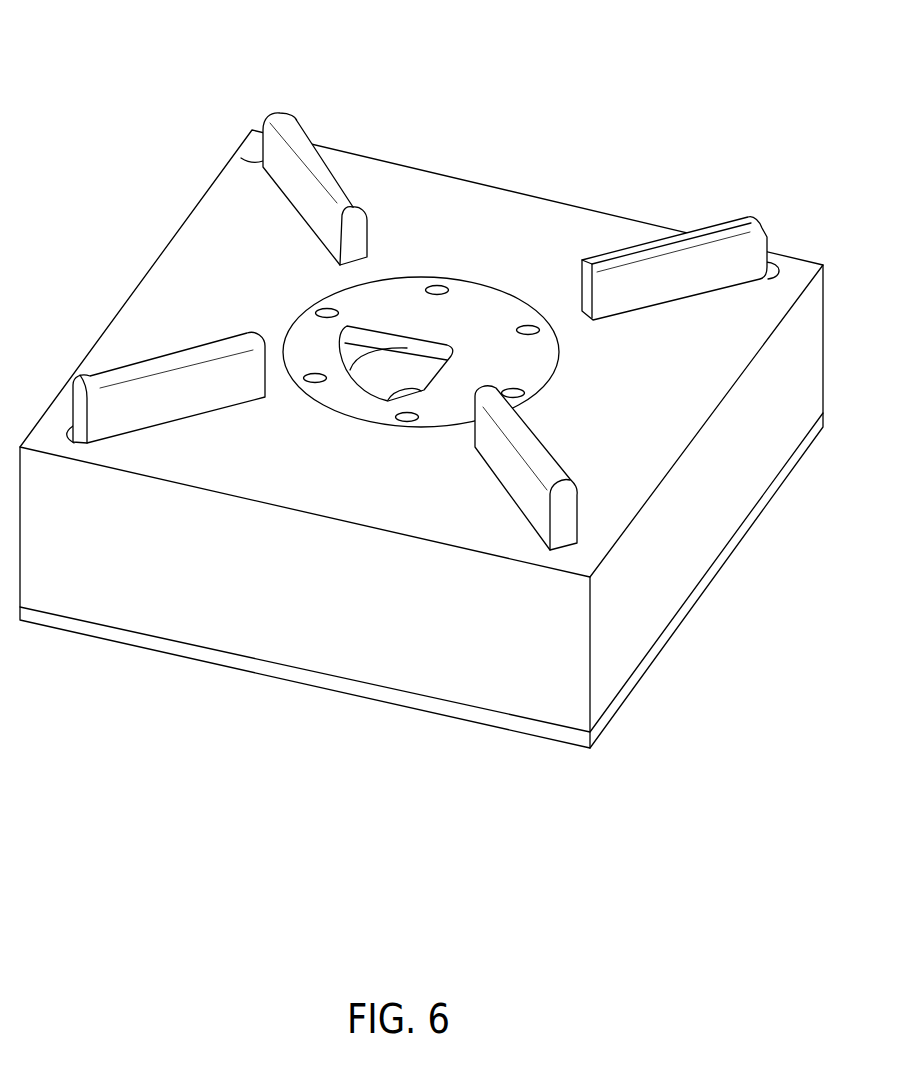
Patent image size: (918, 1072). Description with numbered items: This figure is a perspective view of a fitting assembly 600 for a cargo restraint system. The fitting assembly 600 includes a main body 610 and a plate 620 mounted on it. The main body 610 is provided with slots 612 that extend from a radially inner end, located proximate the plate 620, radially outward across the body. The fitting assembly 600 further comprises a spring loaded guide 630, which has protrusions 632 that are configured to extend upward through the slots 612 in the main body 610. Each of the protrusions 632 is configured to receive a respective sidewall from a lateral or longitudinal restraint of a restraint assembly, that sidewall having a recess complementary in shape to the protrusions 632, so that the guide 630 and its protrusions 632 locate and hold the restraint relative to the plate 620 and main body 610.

The fitting assembly 600 is at (421, 382).
The main body 610 is at (421, 437).
The slots 612 is at (292, 203).
The plate 620 is at (488, 300).
The spring loaded guide 630 is at (692, 222).
The protrusions 632 is at (401, 298).